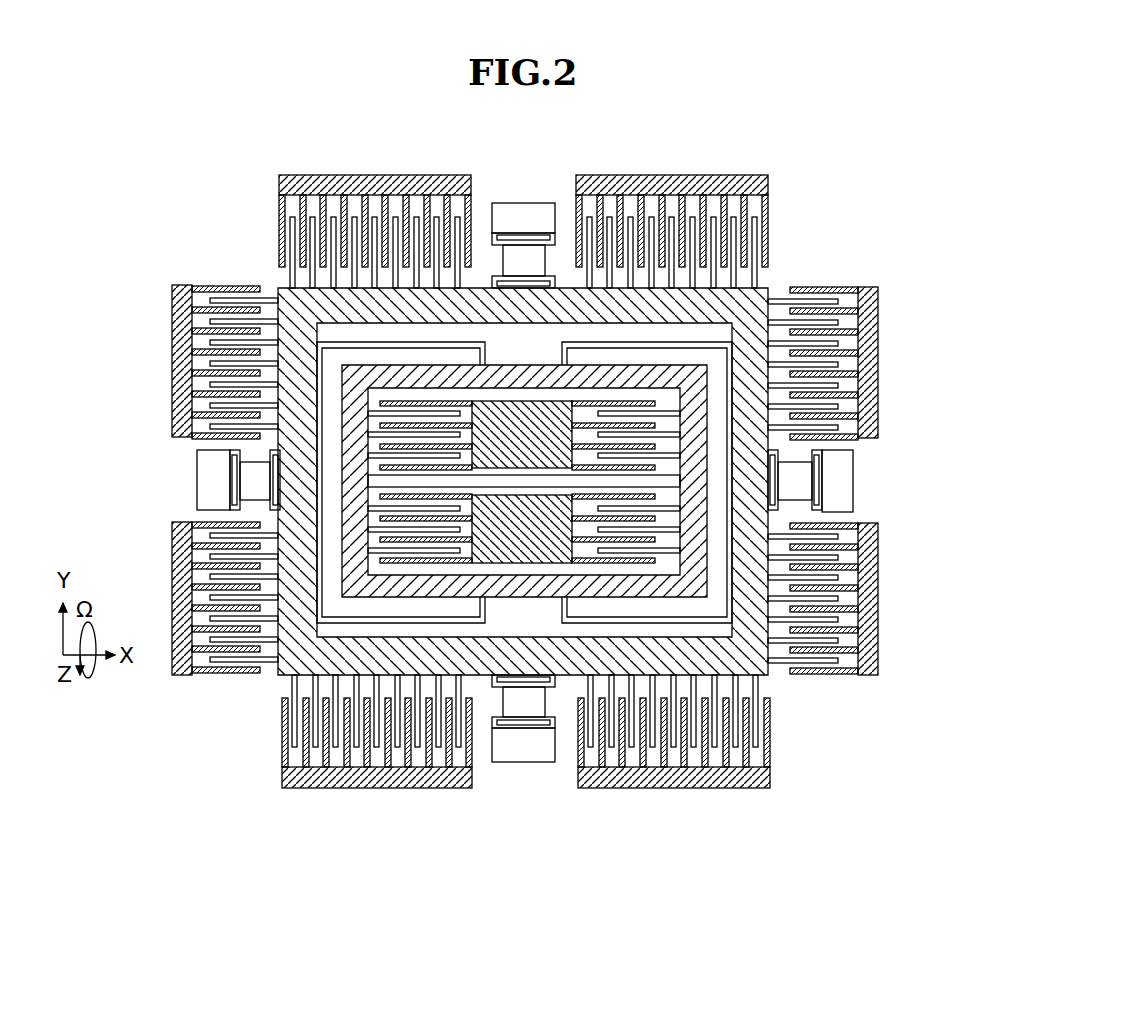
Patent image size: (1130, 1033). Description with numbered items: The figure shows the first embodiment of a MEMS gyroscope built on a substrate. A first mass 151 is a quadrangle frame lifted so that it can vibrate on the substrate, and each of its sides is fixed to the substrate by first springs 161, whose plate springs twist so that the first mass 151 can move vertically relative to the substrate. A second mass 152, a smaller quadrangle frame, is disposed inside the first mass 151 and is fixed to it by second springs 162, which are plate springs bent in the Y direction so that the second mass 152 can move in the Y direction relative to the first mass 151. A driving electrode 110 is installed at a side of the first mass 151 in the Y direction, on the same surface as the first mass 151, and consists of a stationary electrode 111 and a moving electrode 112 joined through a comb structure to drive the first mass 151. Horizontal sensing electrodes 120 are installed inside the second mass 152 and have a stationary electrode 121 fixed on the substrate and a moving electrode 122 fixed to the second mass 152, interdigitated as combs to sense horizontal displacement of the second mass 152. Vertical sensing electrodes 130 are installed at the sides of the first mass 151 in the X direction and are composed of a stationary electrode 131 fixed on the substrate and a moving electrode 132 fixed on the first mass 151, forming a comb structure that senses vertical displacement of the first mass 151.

The driving electrode 110 is at (524, 477).
The stationary electrode 111 is at (655, 190).
The moving electrode 112 is at (690, 215).
The horizontal sensing electrode 120 is at (686, 535).
The stationary electrode 121 is at (557, 412).
The moving electrode 122 is at (670, 437).
The vertical sensing electrode 130 is at (638, 480).
The stationary electrode 131 is at (838, 404).
The moving electrode 132 is at (825, 427).
The first mass 151 is at (293, 665).
The second mass 152 is at (528, 592).
The first spring 161 is at (530, 210).
The second spring 162 is at (335, 342).